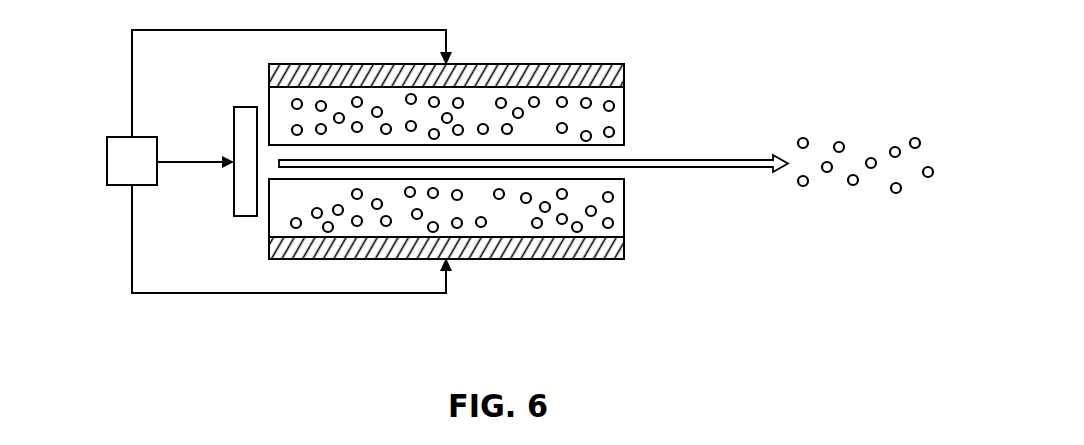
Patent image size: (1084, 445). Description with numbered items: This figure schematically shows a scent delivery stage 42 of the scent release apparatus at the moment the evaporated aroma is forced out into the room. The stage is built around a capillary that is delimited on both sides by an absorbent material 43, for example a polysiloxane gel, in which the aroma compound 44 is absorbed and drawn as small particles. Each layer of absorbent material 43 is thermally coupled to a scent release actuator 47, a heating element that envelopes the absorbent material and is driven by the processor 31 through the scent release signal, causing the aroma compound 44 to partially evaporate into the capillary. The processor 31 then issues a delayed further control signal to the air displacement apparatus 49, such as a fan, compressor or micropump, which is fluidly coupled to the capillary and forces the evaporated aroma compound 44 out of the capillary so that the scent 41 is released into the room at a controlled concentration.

The processor 31 is at (115, 163).
The scent 41 is at (765, 166).
The scent delivery stage 42 is at (601, 204).
The absorbent material 43 is at (623, 110).
The aroma compound 44 is at (577, 229).
The scent release actuator 47 is at (623, 72).
The air displacement apparatus 49 is at (240, 207).